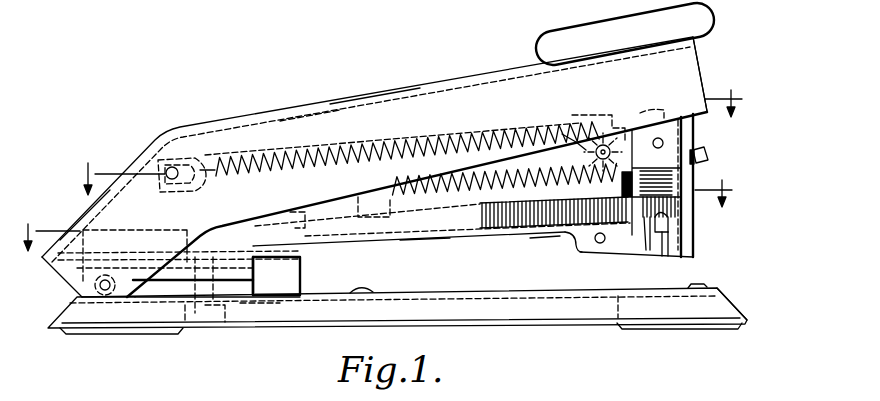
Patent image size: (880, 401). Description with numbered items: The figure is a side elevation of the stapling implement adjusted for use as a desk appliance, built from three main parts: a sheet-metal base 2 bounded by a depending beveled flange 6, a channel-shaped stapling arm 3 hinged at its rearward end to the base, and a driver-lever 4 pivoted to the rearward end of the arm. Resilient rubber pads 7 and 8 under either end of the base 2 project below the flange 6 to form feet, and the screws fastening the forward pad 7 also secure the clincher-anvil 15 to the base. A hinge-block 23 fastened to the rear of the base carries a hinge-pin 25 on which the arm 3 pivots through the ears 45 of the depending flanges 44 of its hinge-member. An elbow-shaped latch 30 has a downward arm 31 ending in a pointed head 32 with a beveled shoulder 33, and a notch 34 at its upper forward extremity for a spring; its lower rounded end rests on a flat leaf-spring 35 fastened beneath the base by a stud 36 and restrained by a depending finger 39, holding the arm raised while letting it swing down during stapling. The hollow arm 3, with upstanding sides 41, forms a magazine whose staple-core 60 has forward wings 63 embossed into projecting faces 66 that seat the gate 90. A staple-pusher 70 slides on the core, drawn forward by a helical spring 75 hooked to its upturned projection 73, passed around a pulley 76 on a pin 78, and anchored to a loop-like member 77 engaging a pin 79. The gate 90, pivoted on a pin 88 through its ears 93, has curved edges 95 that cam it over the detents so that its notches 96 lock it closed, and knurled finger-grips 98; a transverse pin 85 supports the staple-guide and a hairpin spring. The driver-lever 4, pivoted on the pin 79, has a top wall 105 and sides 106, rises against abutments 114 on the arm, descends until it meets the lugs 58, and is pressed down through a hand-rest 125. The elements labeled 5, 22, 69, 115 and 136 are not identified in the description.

The base 2 is at (512, 319).
The stapling arm 3 is at (449, 237).
The driver-lever 4 is at (455, 82).
The staple channel 5 is at (540, 239).
The beveled flange 6 is at (730, 301).
The resilient pad 7 is at (641, 324).
The resilient pad 8 is at (167, 341).
The clincher-anvil 15 is at (700, 285).
The anvil block 22 is at (262, 278).
The hinge-block 23 is at (262, 292).
The hinge-pin 25 is at (108, 278).
The latch 30 is at (197, 238).
The arm of latch 31 is at (196, 283).
The pointed head 32 is at (242, 322).
The beveled shoulder 33 is at (193, 310).
The notch 34 is at (300, 226).
The leaf-spring 35 is at (263, 305).
The stud 36 is at (367, 292).
The finger 39 is at (213, 323).
The sides of arm 41 is at (478, 229).
The flanges 44 is at (157, 290).
The ears 45 is at (100, 304).
The lugs 58 is at (598, 119).
The staple-core 60 is at (133, 229).
The wings 63 is at (628, 258).
The projecting faces 66 is at (664, 257).
The follower 69 is at (676, 228).
The staple-pusher 70 is at (426, 241).
The projection 73 is at (380, 193).
The helical spring 75 is at (415, 188).
The pulley 76 is at (594, 154).
The loop-like member 77 is at (203, 183).
The transverse pin 78 is at (566, 137).
The pin 79 is at (166, 177).
The transverse pin 85 is at (519, 135).
The pin 88 is at (664, 143).
The gate 90 is at (694, 254).
The ears 93 is at (652, 105).
The curved edges 95 is at (648, 256).
The notches 96 is at (676, 220).
The knurled finger-grip 98 is at (674, 181).
The top wall 105 is at (375, 97).
The sides 106 is at (310, 109).
The abutments 114 is at (78, 230).
The cover rear wall 115 is at (700, 73).
The hand-rest 125 is at (625, 34).
The stop block 136 is at (708, 155).